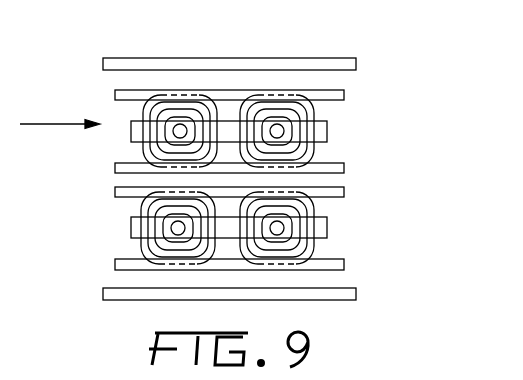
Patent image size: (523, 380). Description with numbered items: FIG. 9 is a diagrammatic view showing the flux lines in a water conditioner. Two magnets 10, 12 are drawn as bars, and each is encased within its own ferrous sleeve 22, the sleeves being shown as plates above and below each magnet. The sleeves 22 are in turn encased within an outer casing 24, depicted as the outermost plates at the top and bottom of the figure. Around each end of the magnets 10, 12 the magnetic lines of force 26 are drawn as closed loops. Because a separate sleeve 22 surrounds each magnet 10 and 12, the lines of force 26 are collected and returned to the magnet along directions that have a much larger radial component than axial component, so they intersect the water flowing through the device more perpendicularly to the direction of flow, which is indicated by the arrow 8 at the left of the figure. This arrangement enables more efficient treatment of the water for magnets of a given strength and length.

The direction arrow 8 is at (32, 124).
The magnet 10 is at (123, 136).
The magnet 12 is at (129, 226).
The ferrous sleeve 22 is at (226, 93).
The outer casing 24 is at (141, 58).
The lines of force 26 is at (132, 113).